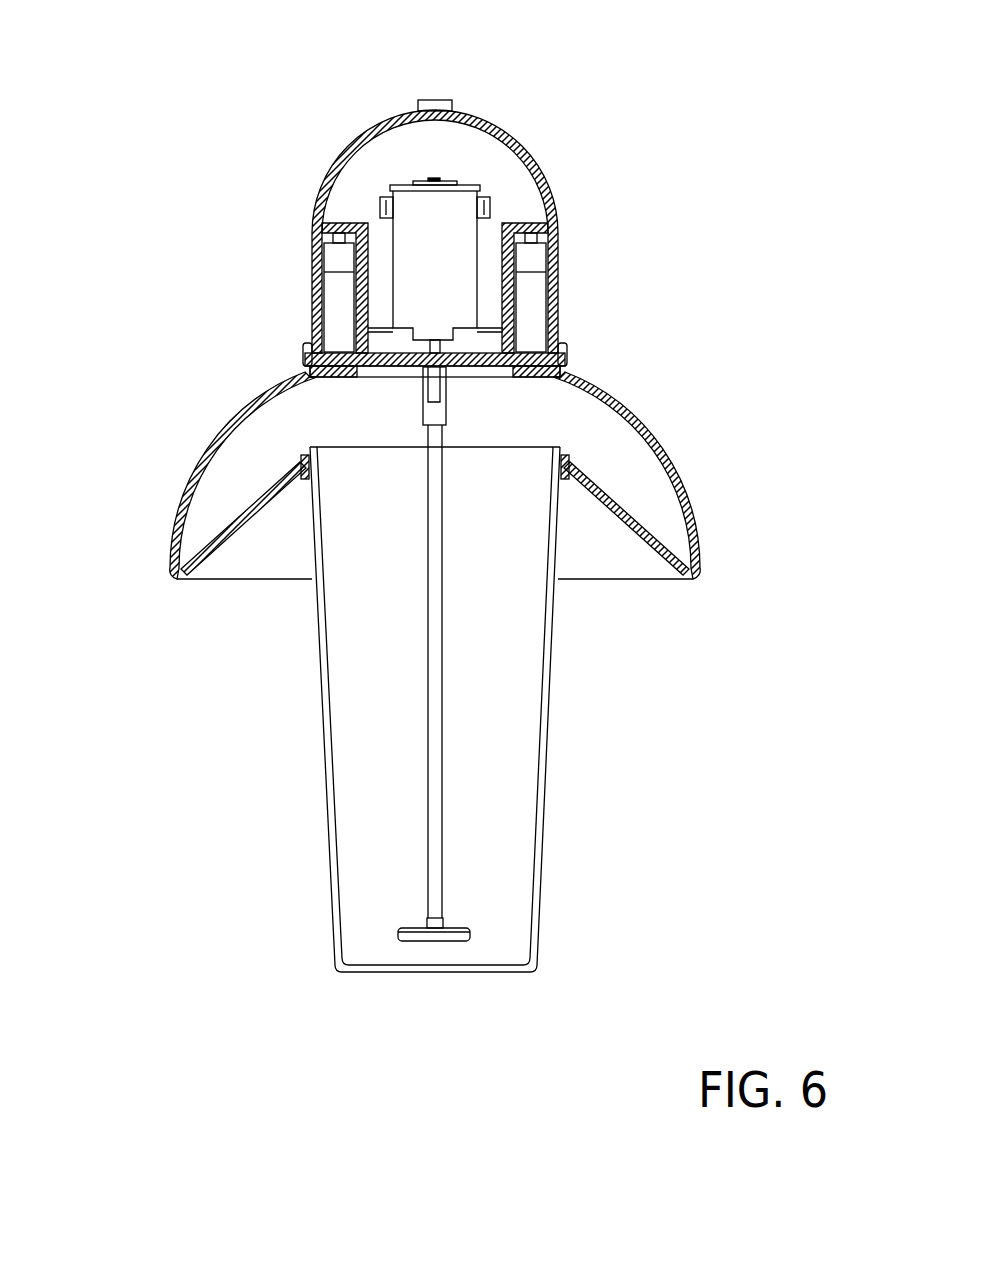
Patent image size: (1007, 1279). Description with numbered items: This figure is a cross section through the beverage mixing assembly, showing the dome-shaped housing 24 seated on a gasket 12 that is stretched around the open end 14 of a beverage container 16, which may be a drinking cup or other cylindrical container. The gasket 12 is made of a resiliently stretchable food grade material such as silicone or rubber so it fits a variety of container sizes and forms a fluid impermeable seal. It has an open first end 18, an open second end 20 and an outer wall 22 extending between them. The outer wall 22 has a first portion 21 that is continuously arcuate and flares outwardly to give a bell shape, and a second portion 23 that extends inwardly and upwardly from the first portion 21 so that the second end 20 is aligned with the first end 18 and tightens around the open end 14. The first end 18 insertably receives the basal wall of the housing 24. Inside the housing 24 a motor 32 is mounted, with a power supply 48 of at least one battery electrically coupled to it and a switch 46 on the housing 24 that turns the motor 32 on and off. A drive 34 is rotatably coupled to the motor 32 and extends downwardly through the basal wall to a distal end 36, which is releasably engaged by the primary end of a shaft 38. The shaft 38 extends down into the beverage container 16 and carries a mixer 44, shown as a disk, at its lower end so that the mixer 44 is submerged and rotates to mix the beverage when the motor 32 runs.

The gasket 12 is at (177, 518).
The open end 14 is at (345, 447).
The beverage container 16 is at (327, 772).
The first end 18 is at (555, 352).
The second end 20 is at (566, 452).
The first portion 21 is at (448, 521).
The outer wall 22 is at (694, 518).
The second portion 23 is at (254, 572).
The housing 24 is at (345, 145).
The motor 32 is at (455, 210).
The drive 34 is at (445, 400).
The distal end 36 is at (443, 425).
The shaft 38 is at (440, 805).
The mixer 44 is at (440, 941).
The switch 46 is at (435, 100).
The power supply 48 is at (335, 268).